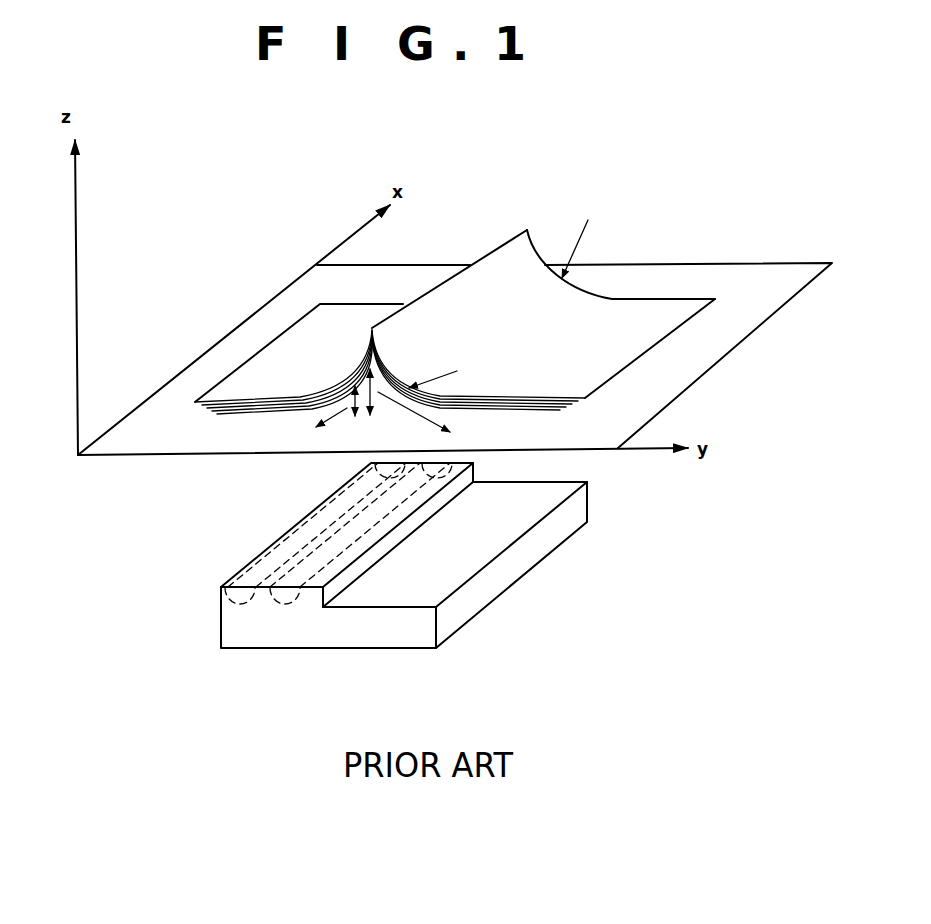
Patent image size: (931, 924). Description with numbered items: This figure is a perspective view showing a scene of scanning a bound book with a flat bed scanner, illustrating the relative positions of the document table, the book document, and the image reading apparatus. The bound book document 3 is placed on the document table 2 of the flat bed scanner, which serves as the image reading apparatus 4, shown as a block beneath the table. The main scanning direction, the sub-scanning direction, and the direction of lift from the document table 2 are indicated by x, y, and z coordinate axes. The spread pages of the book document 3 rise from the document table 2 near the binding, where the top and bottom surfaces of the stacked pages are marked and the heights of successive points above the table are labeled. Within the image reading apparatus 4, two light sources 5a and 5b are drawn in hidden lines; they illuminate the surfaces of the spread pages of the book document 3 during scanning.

The document table 2 is at (710, 261).
The book document 3 is at (635, 333).
The image reading apparatus 4 is at (538, 547).
The light source 5a is at (303, 519).
The light source 5b is at (308, 567).